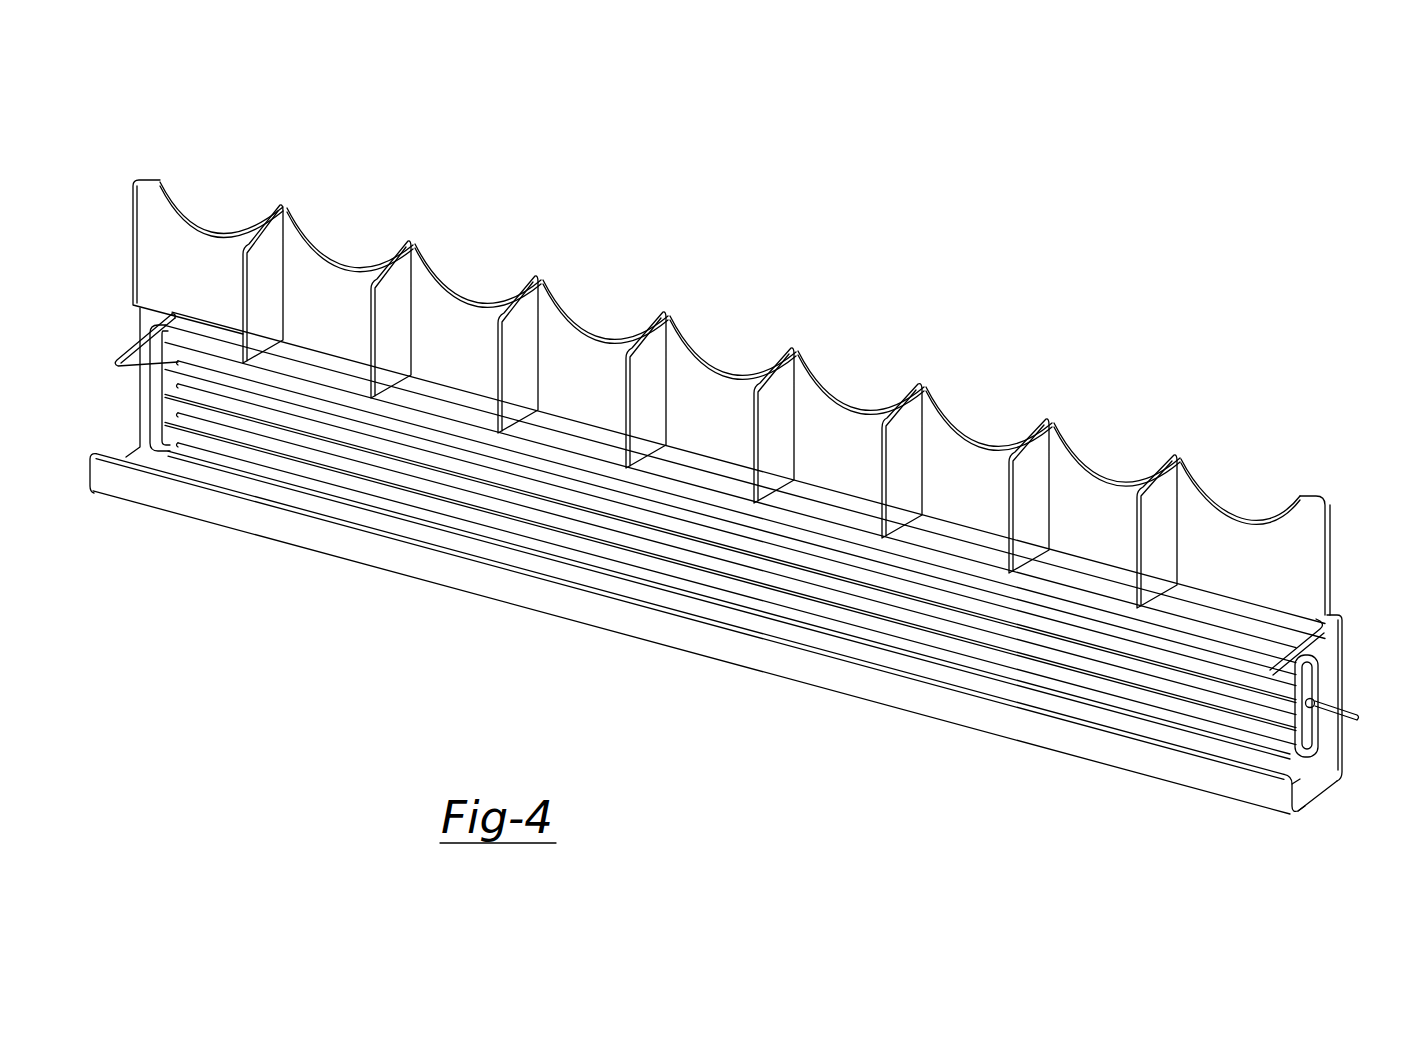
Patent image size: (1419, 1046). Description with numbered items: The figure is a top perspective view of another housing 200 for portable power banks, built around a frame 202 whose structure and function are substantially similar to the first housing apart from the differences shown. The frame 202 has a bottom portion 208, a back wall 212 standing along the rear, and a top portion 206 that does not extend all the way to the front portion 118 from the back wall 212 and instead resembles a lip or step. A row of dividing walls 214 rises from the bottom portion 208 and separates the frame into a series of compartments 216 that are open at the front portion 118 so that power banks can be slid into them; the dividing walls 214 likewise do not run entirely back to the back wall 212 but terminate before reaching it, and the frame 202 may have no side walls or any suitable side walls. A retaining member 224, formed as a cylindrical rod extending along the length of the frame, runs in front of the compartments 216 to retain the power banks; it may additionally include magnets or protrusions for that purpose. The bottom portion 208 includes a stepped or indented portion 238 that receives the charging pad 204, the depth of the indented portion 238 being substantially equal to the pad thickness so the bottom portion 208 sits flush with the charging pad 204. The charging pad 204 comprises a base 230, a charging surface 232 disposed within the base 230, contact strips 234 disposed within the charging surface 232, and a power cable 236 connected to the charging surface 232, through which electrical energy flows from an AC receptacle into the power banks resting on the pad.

The housing 200 is at (758, 135).
The front portion 118 is at (683, 282).
The frame 202 is at (155, 178).
The charging pad 204 is at (1310, 683).
The top portion 206 is at (1155, 757).
The bottom portion 208 is at (183, 232).
The back wall 212 is at (1303, 795).
The dividing walls 214 is at (263, 250).
The compartments 216 is at (212, 265).
The retaining member 224 is at (147, 357).
The base 230 is at (1310, 660).
The charging surface 232 is at (1298, 740).
The contact strips 234 is at (176, 443).
The power cable 236 is at (1322, 703).
The indented portion 238 is at (1355, 722).